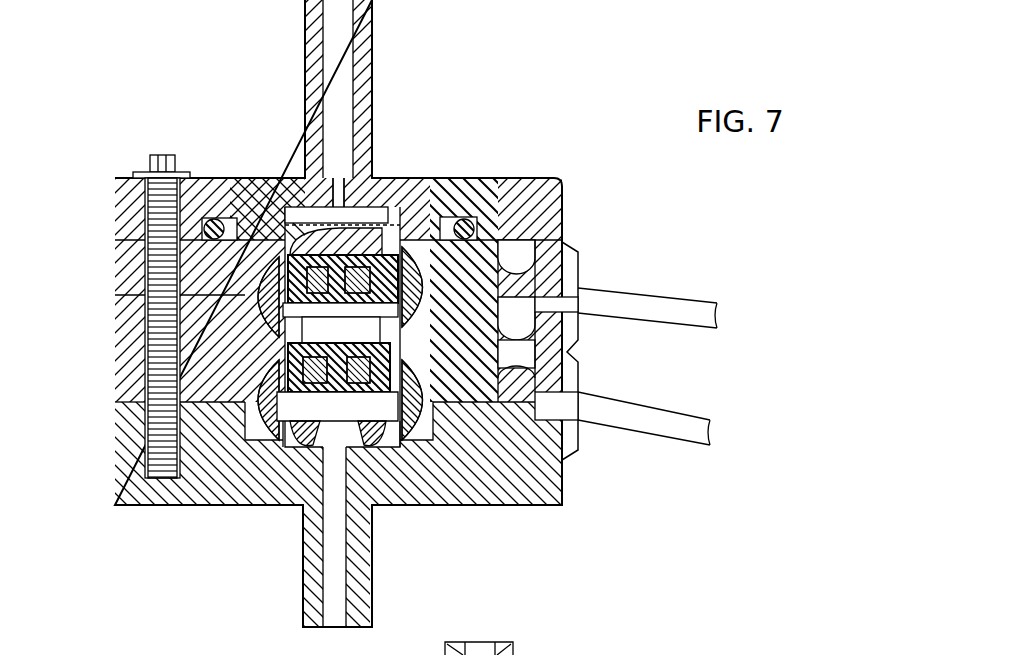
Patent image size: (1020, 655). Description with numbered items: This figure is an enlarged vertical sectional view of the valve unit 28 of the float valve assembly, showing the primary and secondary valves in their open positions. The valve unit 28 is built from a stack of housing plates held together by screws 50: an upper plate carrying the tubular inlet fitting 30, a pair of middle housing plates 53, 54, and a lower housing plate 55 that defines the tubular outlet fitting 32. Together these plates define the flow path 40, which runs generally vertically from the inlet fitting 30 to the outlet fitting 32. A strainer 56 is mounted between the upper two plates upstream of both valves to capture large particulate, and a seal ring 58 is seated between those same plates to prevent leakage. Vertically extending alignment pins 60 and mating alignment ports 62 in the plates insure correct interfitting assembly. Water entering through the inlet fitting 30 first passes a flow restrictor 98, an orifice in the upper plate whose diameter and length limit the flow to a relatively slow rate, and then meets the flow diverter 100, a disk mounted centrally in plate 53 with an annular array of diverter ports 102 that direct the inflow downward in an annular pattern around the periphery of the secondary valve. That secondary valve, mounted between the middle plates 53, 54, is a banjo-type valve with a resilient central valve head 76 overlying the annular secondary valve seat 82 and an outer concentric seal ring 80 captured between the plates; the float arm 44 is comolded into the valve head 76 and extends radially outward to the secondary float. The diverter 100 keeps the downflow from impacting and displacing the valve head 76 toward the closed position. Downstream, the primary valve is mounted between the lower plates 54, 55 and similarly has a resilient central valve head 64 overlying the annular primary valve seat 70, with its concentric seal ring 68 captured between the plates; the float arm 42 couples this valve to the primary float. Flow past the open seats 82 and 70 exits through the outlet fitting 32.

The valve unit 28 is at (151, 110).
The inlet fitting 30 is at (368, 68).
The outlet fitting 32 is at (306, 603).
The flow path 40 is at (325, 470).
The float arm 42 is at (690, 416).
The float arm 44 is at (626, 292).
The screws 50 is at (127, 205).
The middle housing plate 53 is at (122, 255).
The middle housing plate 54 is at (126, 355).
The lower housing plate 55 is at (116, 498).
The strainer 56 is at (115, 182).
The seal ring 58 is at (182, 278).
The alignment pins 60 is at (578, 350).
The alignment ports 62 is at (578, 384).
The valve head 64 is at (372, 425).
The seal ring 68 is at (428, 440).
The primary valve seat 70 is at (300, 432).
The valve head 76 is at (282, 205).
The seal ring 80 is at (505, 255).
The secondary valve seat 82 is at (341, 330).
The flow restrictor 98 is at (372, 172).
The flow diverter 100 is at (432, 178).
The diverter ports 102 is at (492, 182).